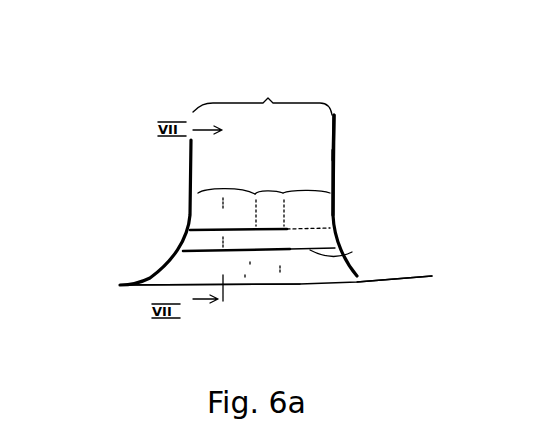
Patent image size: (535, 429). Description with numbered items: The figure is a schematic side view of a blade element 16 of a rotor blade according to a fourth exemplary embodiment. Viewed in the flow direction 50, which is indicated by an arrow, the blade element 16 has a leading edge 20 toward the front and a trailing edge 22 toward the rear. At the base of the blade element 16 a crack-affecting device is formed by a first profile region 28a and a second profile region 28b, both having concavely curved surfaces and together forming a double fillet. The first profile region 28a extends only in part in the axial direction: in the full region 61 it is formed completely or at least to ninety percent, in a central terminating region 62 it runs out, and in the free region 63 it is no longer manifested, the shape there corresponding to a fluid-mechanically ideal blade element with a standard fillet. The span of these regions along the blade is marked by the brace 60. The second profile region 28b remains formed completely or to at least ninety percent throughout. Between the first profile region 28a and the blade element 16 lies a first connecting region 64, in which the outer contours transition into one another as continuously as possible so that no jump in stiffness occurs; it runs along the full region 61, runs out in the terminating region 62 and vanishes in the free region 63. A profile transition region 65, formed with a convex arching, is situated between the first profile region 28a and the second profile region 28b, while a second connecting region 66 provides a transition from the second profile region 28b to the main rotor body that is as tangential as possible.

The flow direction 50 is at (35, 172).
The blade element 16 is at (317, 143).
The trailing edge 22 is at (337, 168).
The tooth group 60 is at (262, 91).
The leading edge 20 is at (193, 192).
The full region 61 is at (226, 187).
The terminating region 62 is at (269, 195).
The free region 63 is at (306, 178).
The first connecting region 64 is at (185, 241).
The first profile region 28a is at (325, 232).
The profile transition region 65 is at (345, 253).
The second connecting region 66 is at (334, 278).
The second profile region 28b is at (307, 285).